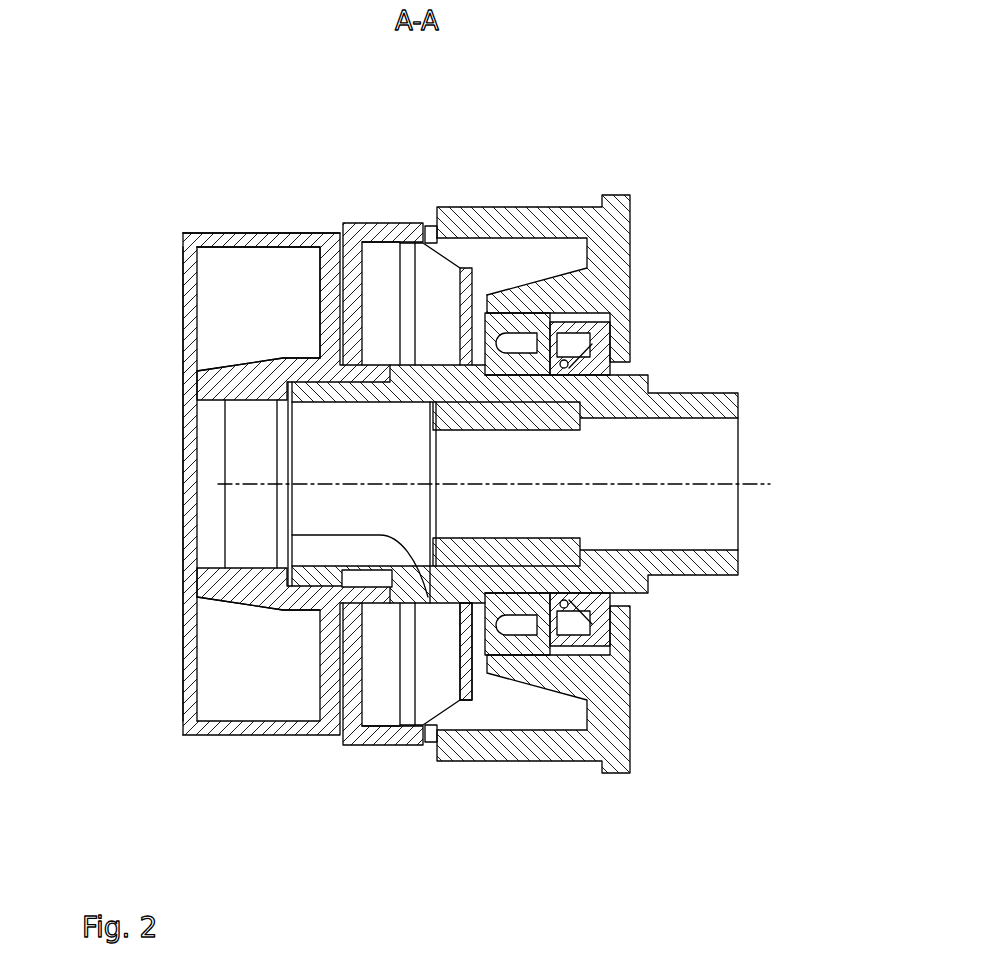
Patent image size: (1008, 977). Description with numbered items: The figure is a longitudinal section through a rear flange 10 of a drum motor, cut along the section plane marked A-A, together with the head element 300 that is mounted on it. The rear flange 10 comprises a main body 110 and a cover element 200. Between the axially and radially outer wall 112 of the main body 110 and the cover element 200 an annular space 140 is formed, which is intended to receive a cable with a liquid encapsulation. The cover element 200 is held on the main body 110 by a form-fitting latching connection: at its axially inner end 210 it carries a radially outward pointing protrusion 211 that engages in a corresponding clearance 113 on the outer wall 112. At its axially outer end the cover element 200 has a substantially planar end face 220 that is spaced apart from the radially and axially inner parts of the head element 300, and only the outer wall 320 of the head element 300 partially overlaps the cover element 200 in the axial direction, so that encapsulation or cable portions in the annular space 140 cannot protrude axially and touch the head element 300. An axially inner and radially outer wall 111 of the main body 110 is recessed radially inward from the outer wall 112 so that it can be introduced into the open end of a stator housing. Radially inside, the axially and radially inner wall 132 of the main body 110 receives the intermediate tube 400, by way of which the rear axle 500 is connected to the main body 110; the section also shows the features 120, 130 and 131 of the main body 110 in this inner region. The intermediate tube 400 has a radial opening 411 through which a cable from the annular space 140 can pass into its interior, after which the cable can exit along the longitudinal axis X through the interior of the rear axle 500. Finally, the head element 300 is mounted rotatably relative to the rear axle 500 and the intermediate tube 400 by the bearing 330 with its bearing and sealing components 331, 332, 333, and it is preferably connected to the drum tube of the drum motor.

The rear flange 10 is at (298, 131).
The main body 110 is at (289, 196).
The axially inner and radially outer wall 111 is at (234, 233).
The axially and radially outer wall 112 is at (378, 737).
The clearance 113 is at (416, 735).
The hub cylindrical wall 120 is at (320, 307).
The hub end wall 130 is at (200, 368).
The hub upper flange 131 is at (320, 355).
The axially and radially inner wall 132 is at (200, 572).
The annular space 140 is at (348, 249).
The cover element 200 is at (442, 238).
The axially inner end 210 is at (422, 236).
The protrusion 211 is at (406, 232).
The end face 220 is at (490, 240).
The head element 300 is at (662, 212).
The outer wall 320 is at (490, 248).
The bearing 330 is at (605, 292).
The bearing and sealing component 331 is at (513, 335).
The bearing and sealing component 332 is at (590, 350).
The bearing and sealing component 333 is at (612, 607).
The intermediate tube 400 is at (500, 580).
The radial opening 411 is at (400, 573).
The rear axle 500 is at (704, 385).
The longitudinal axis X is at (741, 482).